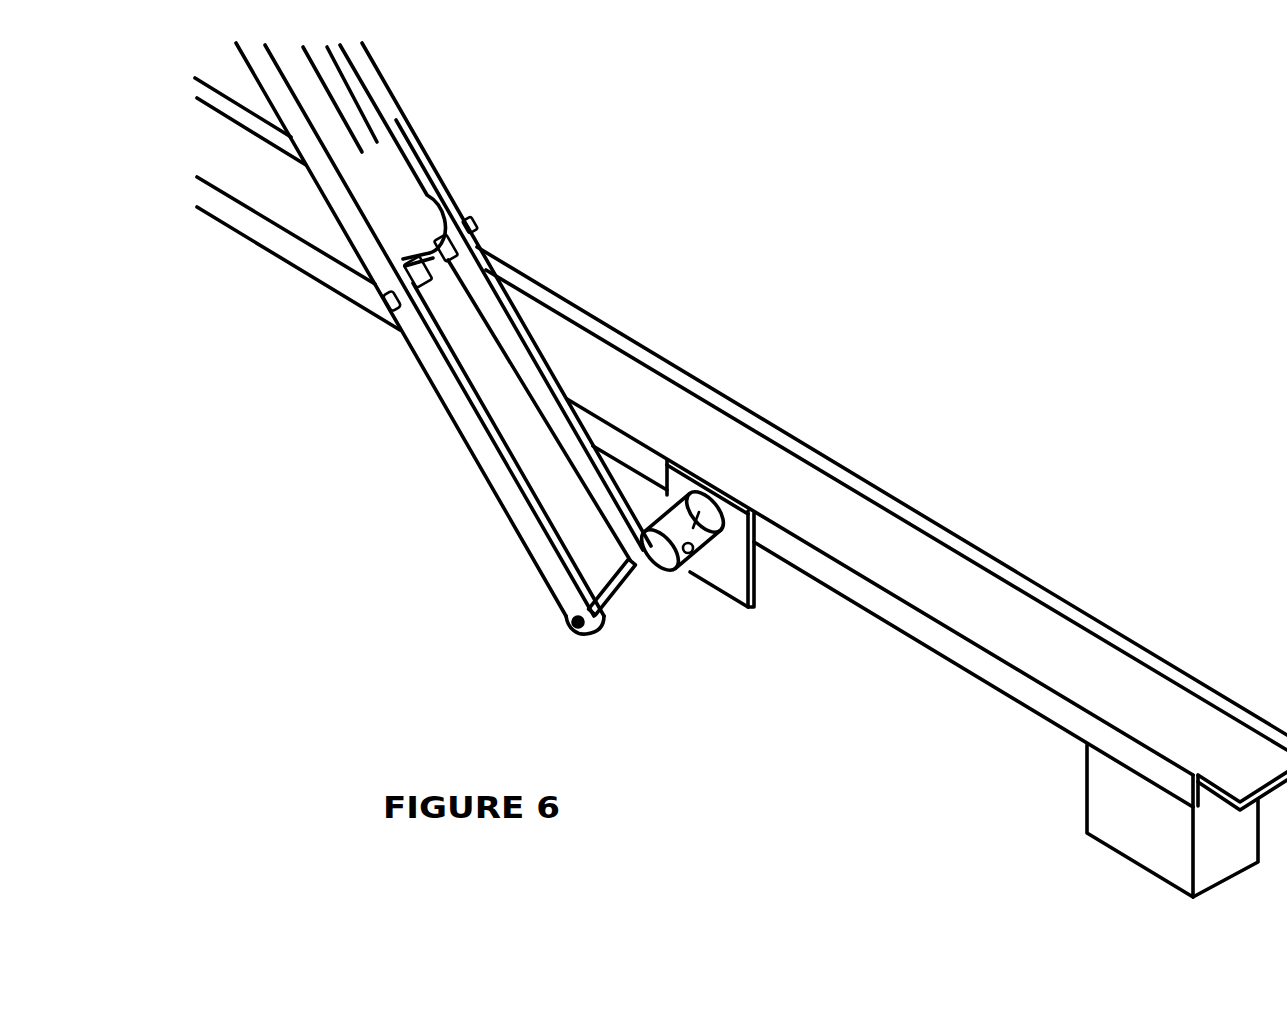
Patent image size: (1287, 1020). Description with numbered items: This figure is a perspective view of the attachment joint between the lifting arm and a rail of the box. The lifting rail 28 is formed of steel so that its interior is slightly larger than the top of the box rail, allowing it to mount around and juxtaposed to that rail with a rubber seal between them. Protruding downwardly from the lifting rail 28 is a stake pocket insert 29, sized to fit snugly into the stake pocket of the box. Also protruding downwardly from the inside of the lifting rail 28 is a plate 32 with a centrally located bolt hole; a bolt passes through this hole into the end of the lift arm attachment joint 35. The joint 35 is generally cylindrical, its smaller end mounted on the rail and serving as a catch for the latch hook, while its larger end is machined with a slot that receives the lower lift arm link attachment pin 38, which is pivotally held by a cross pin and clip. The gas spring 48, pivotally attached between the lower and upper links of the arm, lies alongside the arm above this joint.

The lifting rail 28 is at (921, 553).
The stake pocket insert 29 is at (1138, 817).
The plate 32 is at (727, 583).
The lift arm attachment joint 35 is at (702, 566).
The lower lift arm link attachment pin 38 is at (576, 628).
The gas spring 48 is at (407, 213).